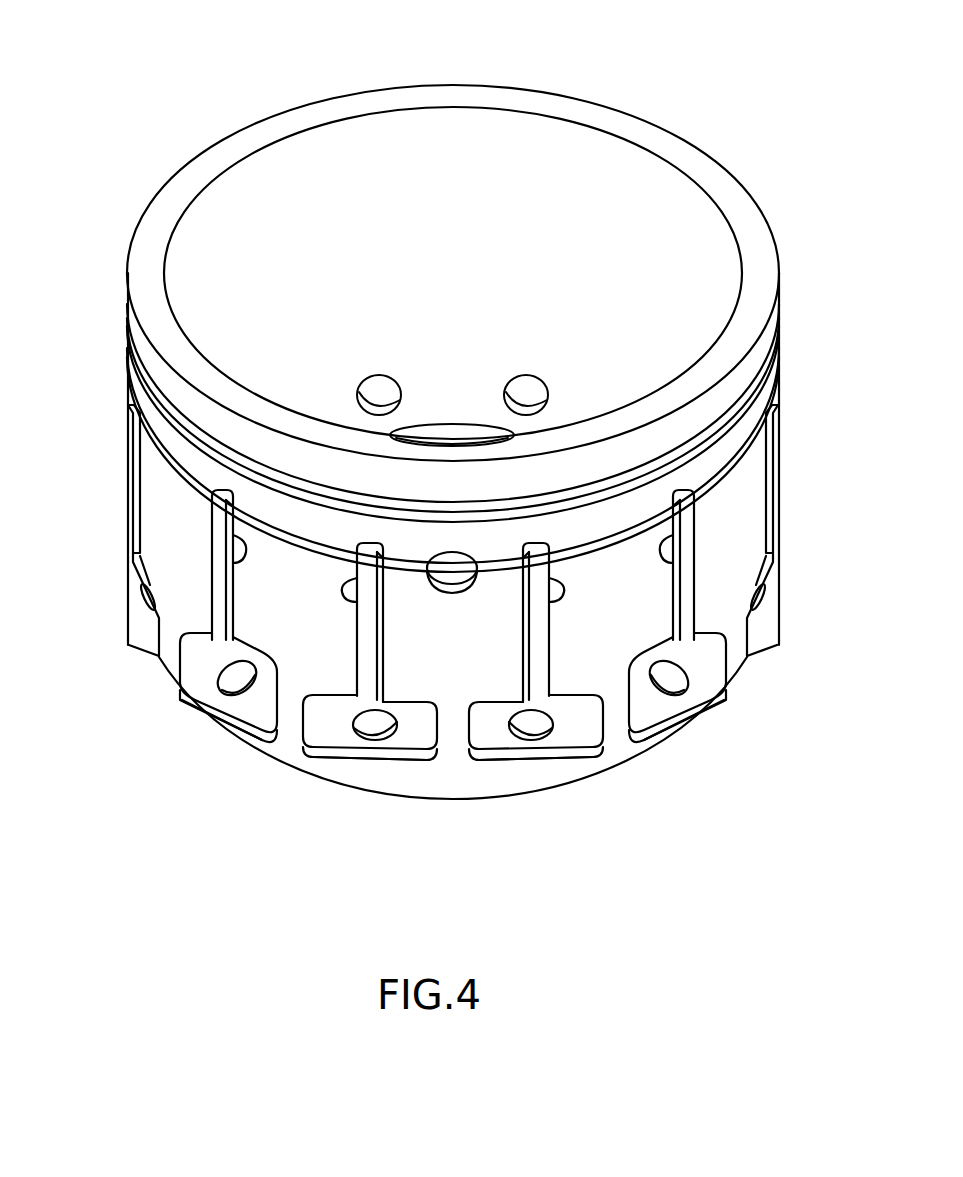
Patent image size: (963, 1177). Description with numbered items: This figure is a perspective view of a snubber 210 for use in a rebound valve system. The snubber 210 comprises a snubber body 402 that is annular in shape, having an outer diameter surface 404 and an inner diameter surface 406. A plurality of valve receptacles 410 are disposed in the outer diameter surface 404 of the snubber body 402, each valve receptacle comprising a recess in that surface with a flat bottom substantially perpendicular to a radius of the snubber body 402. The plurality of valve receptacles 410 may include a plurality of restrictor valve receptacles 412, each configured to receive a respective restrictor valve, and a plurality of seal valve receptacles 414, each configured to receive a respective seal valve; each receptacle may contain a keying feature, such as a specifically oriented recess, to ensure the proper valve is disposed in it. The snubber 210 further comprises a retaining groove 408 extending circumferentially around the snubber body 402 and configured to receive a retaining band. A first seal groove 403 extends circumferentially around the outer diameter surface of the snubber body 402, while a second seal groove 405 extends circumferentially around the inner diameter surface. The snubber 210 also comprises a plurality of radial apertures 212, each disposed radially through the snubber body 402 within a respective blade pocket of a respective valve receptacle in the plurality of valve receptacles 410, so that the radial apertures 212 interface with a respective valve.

The snubber 210 is at (148, 82).
The snubber body 402 is at (406, 327).
The first seal groove 403 is at (143, 388).
The outer diameter surface 404 is at (143, 346).
The second seal groove 405 is at (427, 430).
The inner diameter surface 406 is at (534, 180).
The retaining groove 408 is at (159, 457).
The plurality of valve receptacles 410 is at (198, 658).
The plurality of radial apertures 212 is at (250, 692).
The plurality of restrictor valve receptacles 412 is at (252, 716).
The plurality of seal valve receptacles 414 is at (333, 742).